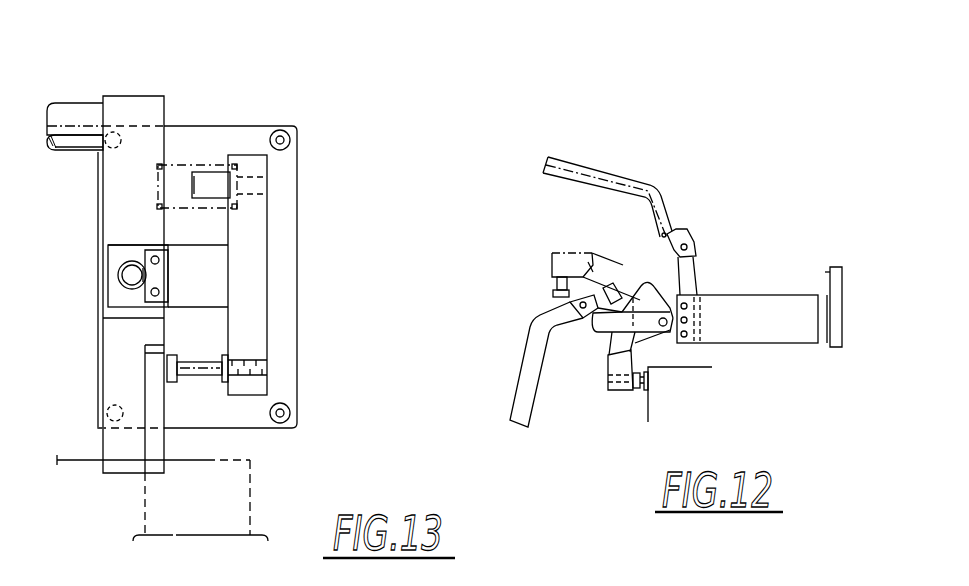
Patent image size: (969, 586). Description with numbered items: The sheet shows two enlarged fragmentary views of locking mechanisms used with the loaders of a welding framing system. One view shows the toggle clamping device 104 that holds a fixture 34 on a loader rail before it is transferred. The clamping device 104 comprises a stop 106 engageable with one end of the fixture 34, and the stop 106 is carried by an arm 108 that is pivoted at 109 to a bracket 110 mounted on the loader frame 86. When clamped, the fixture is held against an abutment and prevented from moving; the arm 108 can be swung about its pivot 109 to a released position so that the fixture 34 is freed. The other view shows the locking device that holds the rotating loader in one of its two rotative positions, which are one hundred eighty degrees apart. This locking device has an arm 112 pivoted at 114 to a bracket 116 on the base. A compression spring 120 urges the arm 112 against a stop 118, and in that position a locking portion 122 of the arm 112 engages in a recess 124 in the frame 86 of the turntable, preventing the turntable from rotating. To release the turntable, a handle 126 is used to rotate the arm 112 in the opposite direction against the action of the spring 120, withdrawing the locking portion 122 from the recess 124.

In FIG. 12, the fixture 34 is at (672, 393).
In FIG. 13, the frame 86 is at (253, 507).
In FIG. 12, the frame 86 is at (843, 300).
In FIG. 12, the toggle clamping device 104 is at (725, 278).
In FIG. 12, the stop 106 is at (540, 290).
In FIG. 12, the arm 108 is at (628, 176).
In FIG. 12, the pivot 109 is at (690, 320).
In FIG. 13, the bracket 110 is at (80, 258).
In FIG. 12, the bracket 110 is at (762, 302).
In FIG. 13, the arm 112 is at (112, 344).
In FIG. 13, the pivot 114 is at (130, 277).
In FIG. 13, the bracket 116 is at (217, 272).
In FIG. 13, the stop 118 is at (179, 358).
In FIG. 13, the compression spring 120 is at (177, 165).
In FIG. 13, the locking portion 122 is at (160, 476).
In FIG. 13, the recess 124 is at (168, 467).
In FIG. 13, the handle 126 is at (84, 102).